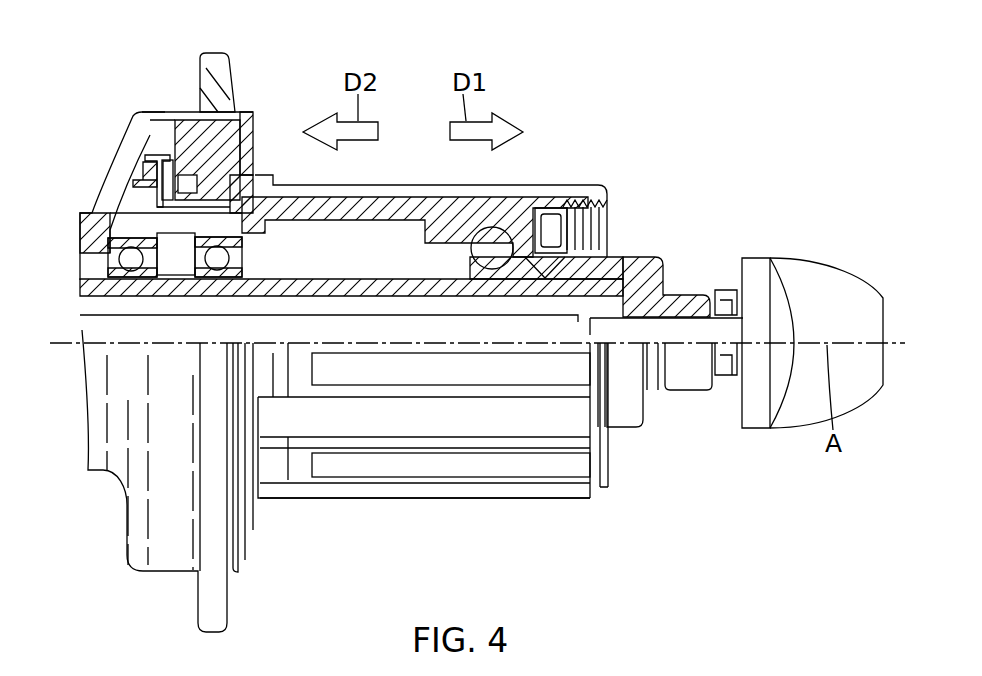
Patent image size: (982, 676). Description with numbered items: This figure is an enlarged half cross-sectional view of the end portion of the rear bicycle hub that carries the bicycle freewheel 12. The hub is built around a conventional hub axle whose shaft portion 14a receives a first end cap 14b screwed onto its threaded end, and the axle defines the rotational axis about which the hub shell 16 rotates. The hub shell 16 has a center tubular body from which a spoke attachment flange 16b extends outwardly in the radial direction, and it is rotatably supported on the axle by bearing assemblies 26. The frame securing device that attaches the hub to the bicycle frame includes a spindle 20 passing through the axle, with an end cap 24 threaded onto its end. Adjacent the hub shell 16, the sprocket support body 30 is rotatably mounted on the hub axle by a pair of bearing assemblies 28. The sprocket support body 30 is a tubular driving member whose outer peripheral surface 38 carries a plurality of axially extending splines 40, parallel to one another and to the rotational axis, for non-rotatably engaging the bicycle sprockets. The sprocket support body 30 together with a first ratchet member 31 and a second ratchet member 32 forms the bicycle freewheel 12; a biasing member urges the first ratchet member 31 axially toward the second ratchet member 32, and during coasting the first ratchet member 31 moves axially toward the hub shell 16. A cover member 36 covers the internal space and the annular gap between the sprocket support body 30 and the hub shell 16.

The bicycle freewheel 12 is at (433, 469).
The shaft portion 14a is at (104, 277).
The first end cap 14b is at (638, 256).
The hub shell 16 is at (93, 206).
The spoke attachment flange 16b is at (212, 52).
The spindle 20 is at (687, 330).
The end cap 24 is at (818, 266).
The bearing assembly 26 is at (124, 290).
The bearing assembly 28 is at (247, 262).
The sprocket support body 30 is at (410, 188).
The first ratchet member 31 is at (190, 165).
The second ratchet member 32 is at (186, 128).
The cover member 36 is at (250, 130).
The outer peripheral surface 38 is at (455, 415).
The splines 40 is at (360, 455).